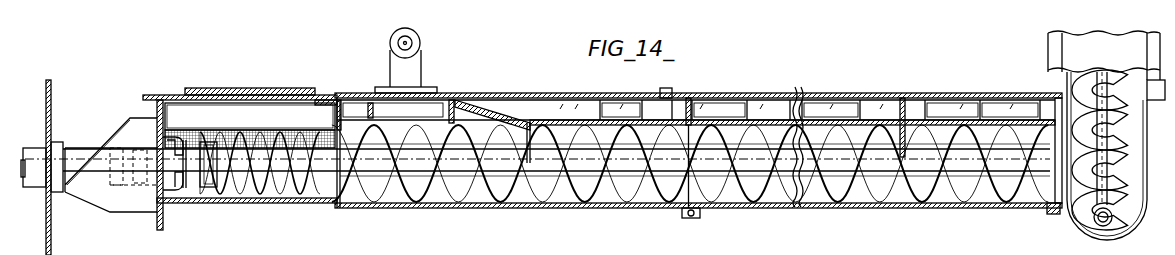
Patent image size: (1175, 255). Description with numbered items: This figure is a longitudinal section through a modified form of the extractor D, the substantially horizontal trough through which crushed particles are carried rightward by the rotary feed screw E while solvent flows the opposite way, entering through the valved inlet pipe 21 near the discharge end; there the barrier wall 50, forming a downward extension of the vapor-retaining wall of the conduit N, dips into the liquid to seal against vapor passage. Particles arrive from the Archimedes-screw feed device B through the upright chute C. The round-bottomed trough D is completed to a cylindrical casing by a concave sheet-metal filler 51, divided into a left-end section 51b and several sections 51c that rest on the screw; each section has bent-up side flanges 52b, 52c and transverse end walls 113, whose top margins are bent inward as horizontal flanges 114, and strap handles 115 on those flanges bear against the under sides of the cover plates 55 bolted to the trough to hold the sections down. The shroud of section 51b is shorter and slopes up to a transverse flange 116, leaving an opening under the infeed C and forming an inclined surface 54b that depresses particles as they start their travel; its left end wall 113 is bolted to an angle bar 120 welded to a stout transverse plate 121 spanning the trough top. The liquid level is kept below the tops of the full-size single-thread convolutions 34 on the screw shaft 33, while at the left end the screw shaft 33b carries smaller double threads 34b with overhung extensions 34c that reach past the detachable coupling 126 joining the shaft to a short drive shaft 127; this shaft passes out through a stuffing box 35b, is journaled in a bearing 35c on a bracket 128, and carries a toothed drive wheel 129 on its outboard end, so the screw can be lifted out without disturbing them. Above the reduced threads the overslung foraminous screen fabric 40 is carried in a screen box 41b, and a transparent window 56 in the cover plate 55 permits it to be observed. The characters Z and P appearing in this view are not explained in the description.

The toothed drive wheel 129 is at (46, 91).
The bracket 128 is at (130, 120).
The bearing 35c is at (85, 150).
The drive shaft 127 is at (25, 178).
The stuffing box 35b is at (143, 197).
The overhung end extensions 34c is at (183, 201).
The coupling 126 is at (210, 195).
The double feed screw threads 34b is at (300, 192).
The cover plates 55 is at (163, 97).
The transparent window 56 is at (247, 93).
The strainer screen fabric 40 is at (262, 129).
The feed screw shaft 33b is at (295, 128).
The screen box 41b is at (323, 107).
The transverse plate 121 is at (352, 98).
The transverse angle bar 120 is at (351, 115).
The transverse end flanges 113 is at (373, 112).
The transverse flange 116 is at (453, 99).
The inclined surface 54b is at (482, 110).
The strap handles 115 is at (548, 103).
The side flanges 52b is at (574, 110).
The left-end filler section 51b is at (602, 100).
The horizontal flanges 114 is at (645, 99).
The side flanges 52c is at (725, 110).
The filler sections 51c is at (750, 100).
The filler 51 is at (798, 97).
The screw convolutions 34 is at (427, 190).
The screw shaft 33 is at (545, 165).
The barrier wall 50 is at (698, 153).
The valved inlet pipe 21 is at (1143, 70).
The feed device B is at (412, 43).
The chute C is at (410, 72).
The flow direction Z is at (445, 124).
The feed screw E is at (505, 198).
The extractor trough D is at (800, 230).
The conduit N is at (1077, 42).
The bottom P is at (1085, 208).